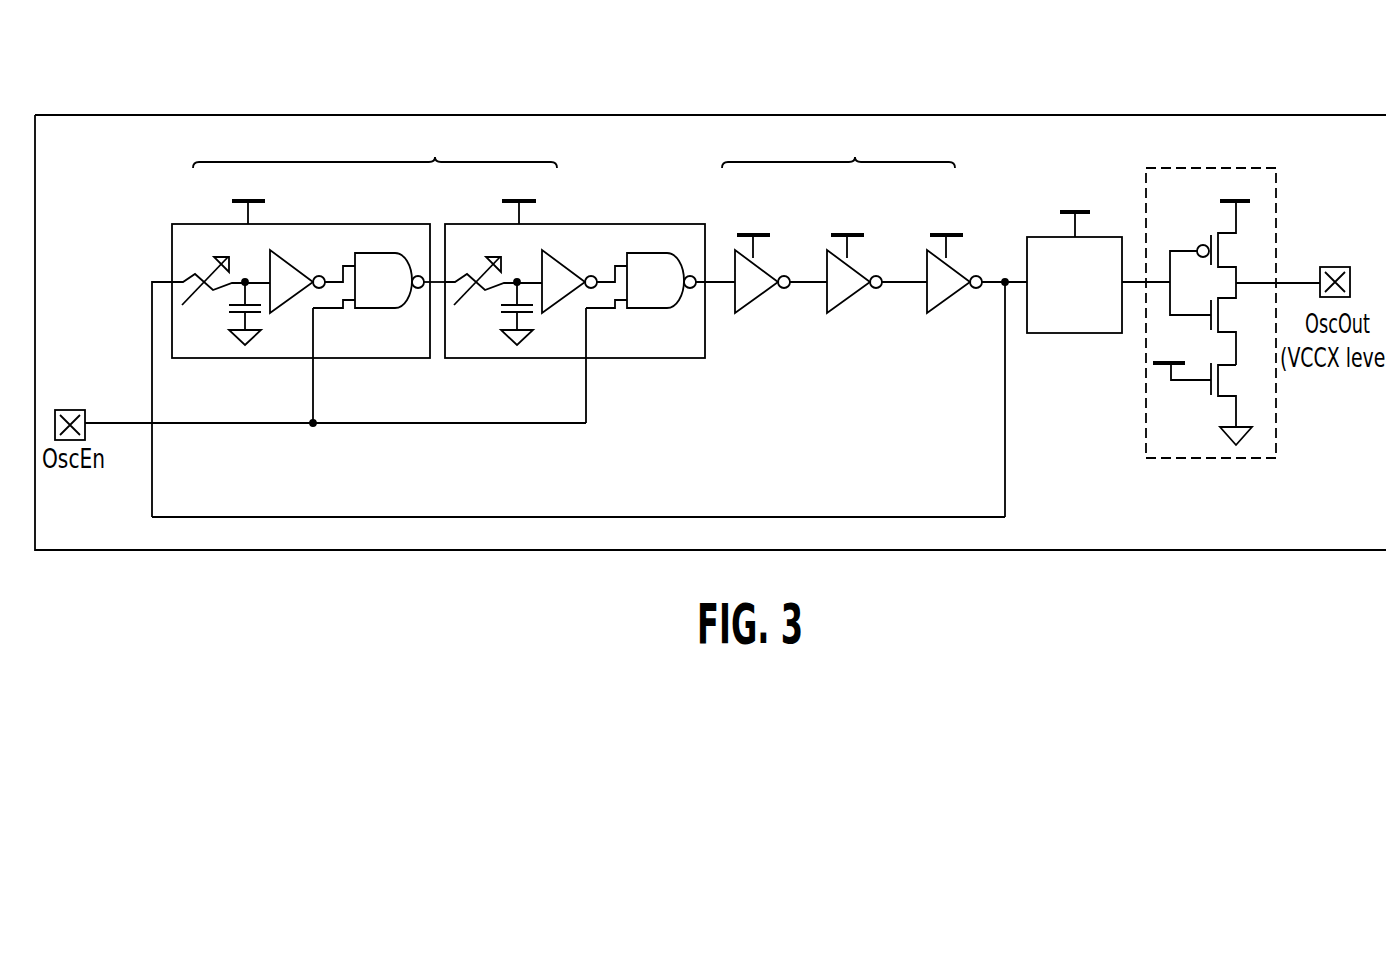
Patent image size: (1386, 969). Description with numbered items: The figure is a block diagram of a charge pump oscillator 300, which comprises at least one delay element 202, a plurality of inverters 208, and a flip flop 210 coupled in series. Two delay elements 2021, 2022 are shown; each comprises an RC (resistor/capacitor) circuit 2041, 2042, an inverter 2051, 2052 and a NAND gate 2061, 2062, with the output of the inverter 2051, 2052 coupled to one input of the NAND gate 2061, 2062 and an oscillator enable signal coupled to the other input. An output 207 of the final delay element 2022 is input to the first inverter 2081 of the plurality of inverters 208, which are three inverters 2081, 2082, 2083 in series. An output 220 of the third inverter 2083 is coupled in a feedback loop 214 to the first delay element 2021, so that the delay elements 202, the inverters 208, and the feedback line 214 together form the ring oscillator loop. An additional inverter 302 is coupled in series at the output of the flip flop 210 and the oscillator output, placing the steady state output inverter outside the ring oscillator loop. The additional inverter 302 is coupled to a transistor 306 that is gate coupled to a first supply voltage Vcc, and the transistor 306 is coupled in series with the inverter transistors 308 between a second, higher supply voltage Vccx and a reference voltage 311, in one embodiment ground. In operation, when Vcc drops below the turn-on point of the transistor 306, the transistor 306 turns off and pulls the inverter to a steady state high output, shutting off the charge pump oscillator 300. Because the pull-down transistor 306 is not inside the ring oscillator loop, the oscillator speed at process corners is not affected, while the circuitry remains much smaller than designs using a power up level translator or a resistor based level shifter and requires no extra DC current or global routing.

The charge pump oscillator 300 is at (1127, 56).
The delay element 202 is at (389, 243).
The first delay element 2021 is at (150, 232).
The second delay element 2022 is at (486, 212).
The RC circuit 2041 is at (228, 308).
The RC circuit 2042 is at (500, 308).
The inverter 2051 is at (286, 264).
The inverter 2052 is at (559, 264).
The NAND gate 2061 is at (382, 309).
The NAND gate 2062 is at (652, 309).
The output of the final delay element 207 is at (723, 287).
The plurality of inverters 208 is at (874, 220).
The first inverter 2081 is at (770, 268).
The second inverter 2082 is at (862, 268).
The third inverter 2083 is at (960, 268).
The output 220 is at (1018, 288).
The feedback loop 214 is at (488, 515).
The flip flop 210 is at (1088, 333).
The additional inverter 302 is at (1236, 168).
The inverter transistors 308 is at (1233, 313).
The transistor 306 is at (1238, 397).
The reference voltage 311 is at (1240, 437).